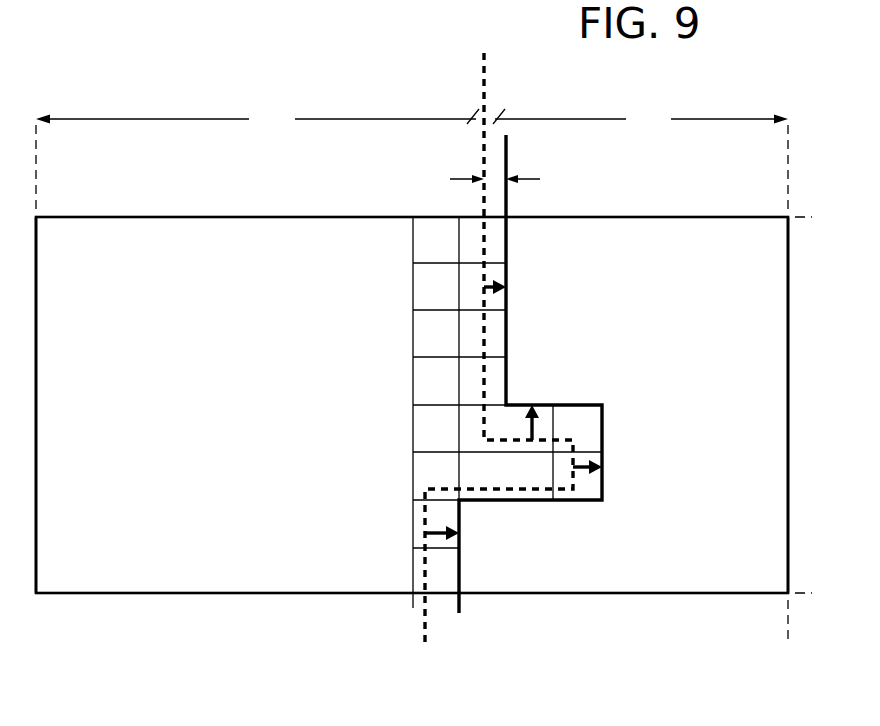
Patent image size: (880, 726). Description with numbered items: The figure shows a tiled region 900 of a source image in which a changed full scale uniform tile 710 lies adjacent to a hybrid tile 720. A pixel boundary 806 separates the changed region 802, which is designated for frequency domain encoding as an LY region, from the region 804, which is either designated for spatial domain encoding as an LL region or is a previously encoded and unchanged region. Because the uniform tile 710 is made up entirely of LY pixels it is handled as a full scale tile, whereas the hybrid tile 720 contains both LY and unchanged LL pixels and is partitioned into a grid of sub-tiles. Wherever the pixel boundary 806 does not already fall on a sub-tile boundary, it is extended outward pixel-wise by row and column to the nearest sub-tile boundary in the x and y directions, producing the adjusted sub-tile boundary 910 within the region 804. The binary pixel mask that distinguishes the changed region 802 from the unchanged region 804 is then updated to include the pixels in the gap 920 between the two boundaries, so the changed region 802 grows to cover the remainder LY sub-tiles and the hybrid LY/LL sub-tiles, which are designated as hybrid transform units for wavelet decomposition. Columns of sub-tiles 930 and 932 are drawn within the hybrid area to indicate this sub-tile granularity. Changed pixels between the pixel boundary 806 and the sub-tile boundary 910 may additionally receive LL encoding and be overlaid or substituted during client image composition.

The tiled region 900 is at (424, 458).
The uniform tile 710 is at (134, 405).
The hybrid tile 720 is at (706, 405).
The region 802 is at (412, 374).
The region 804 is at (640, 118).
The pixel boundary 806 is at (484, 90).
The sub-tile boundary 910 is at (509, 152).
The gap 920 is at (510, 183).
The first column of cells 930 is at (530, 358).
The second column of cells 932 is at (436, 412).